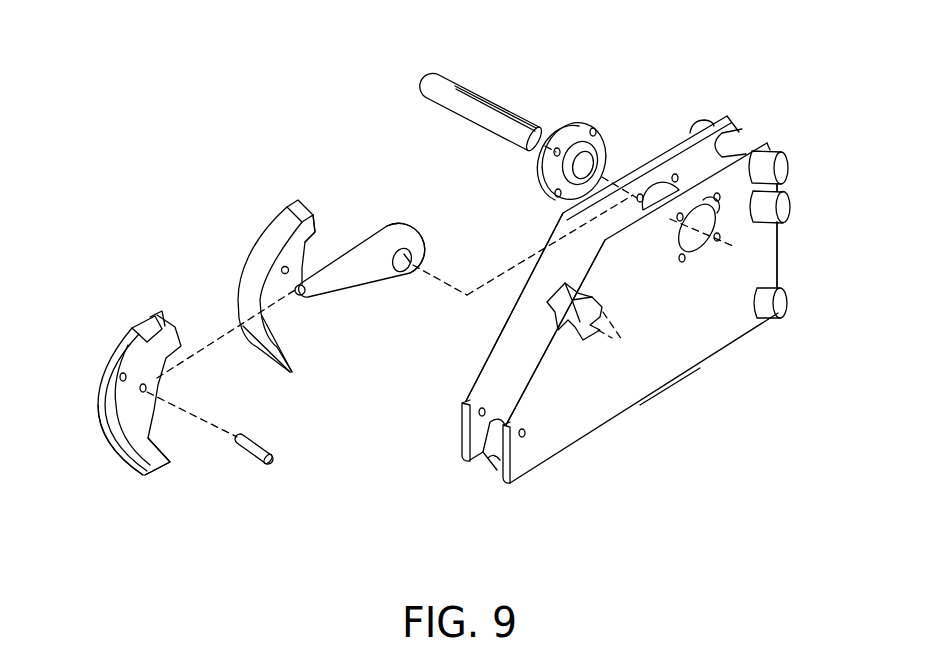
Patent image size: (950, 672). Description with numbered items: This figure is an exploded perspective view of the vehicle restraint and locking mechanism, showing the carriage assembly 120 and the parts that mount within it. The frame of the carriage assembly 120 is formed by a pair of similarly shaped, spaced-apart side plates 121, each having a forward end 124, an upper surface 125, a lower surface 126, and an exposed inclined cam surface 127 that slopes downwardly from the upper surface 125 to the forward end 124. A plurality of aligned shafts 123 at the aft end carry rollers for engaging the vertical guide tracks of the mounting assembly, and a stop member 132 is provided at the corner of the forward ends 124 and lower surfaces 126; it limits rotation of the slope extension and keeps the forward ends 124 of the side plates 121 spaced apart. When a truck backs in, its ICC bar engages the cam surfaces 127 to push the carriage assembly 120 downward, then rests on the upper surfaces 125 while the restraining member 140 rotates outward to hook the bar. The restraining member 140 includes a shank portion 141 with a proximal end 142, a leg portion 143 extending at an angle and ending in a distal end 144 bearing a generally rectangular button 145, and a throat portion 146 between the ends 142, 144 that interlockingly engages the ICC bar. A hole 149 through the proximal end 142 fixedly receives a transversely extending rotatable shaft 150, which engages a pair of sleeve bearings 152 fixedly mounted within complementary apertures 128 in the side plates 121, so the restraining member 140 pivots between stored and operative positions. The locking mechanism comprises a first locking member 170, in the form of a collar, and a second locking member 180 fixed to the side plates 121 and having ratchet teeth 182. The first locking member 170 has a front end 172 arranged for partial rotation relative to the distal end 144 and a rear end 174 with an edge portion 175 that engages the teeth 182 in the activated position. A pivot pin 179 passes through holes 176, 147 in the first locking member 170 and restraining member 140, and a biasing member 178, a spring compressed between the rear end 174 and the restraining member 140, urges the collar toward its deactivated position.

The carriage assembly 120 is at (641, 292).
The side plates 121 is at (513, 352).
The shafts 123 is at (784, 304).
The forward end 124 is at (462, 437).
The upper surface 125 is at (657, 155).
The lower surface 126 is at (778, 261).
The exposed inclined cam surface 127 is at (480, 375).
The apertures 128 is at (703, 190).
The stop member 132 is at (483, 452).
The restraining member 140 is at (374, 313).
The shank portion 141 is at (353, 297).
The proximal end 142 is at (413, 246).
The leg portion 143 is at (283, 260).
The distal end 144 is at (313, 219).
The button 145 is at (293, 205).
The throat portion 146 is at (303, 295).
The hole 147 is at (288, 268).
The hole 149 is at (413, 258).
The rotatable shaft 150 is at (457, 86).
The sleeve bearings 152 is at (582, 123).
The first locking member 170 is at (129, 404).
The front end 172 is at (180, 343).
The rear end 174 is at (152, 478).
The edge portion 175 is at (171, 463).
The hole 176 is at (143, 388).
The biasing member 178 is at (273, 361).
The pivot pin 179 is at (263, 465).
The second locking member 180 is at (540, 280).
The ratchet teeth 182 is at (573, 317).